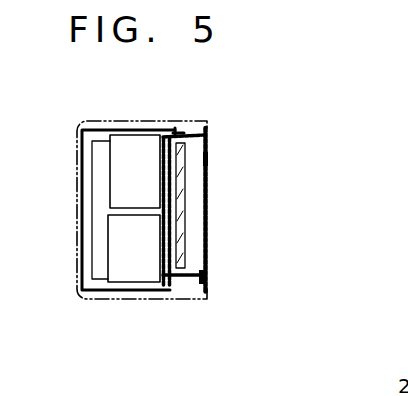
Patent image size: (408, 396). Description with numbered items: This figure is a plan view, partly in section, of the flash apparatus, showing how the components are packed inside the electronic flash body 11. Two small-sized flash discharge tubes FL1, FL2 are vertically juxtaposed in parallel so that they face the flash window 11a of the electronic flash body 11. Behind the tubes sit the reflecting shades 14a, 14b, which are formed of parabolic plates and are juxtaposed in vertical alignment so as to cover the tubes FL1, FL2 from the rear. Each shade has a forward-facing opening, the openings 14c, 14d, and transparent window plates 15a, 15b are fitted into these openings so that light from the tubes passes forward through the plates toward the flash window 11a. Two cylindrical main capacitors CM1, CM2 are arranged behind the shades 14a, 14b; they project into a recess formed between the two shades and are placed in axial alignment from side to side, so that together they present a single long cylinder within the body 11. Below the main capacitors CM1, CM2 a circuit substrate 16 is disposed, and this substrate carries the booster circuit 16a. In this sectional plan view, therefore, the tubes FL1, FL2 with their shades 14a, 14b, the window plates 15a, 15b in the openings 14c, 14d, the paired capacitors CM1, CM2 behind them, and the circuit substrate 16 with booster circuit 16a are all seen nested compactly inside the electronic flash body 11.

The electronic flash body 11 is at (135, 122).
The flash window 11a is at (212, 222).
The reflecting shade 14a is at (197, 127).
The reflecting shade 14b is at (209, 189).
The opening 14c is at (211, 154).
The opening 14d is at (258, 150).
The transparent window plate 15a is at (203, 274).
The transparent window plate 15b is at (229, 271).
The circuit substrate 16 is at (85, 148).
The booster circuit 16a is at (102, 213).
The main capacitor CM1 is at (125, 247).
The main capacitor CM2 is at (122, 174).
The flash discharge tube FL1 is at (180, 190).
The flash discharge tube FL2 is at (232, 205).